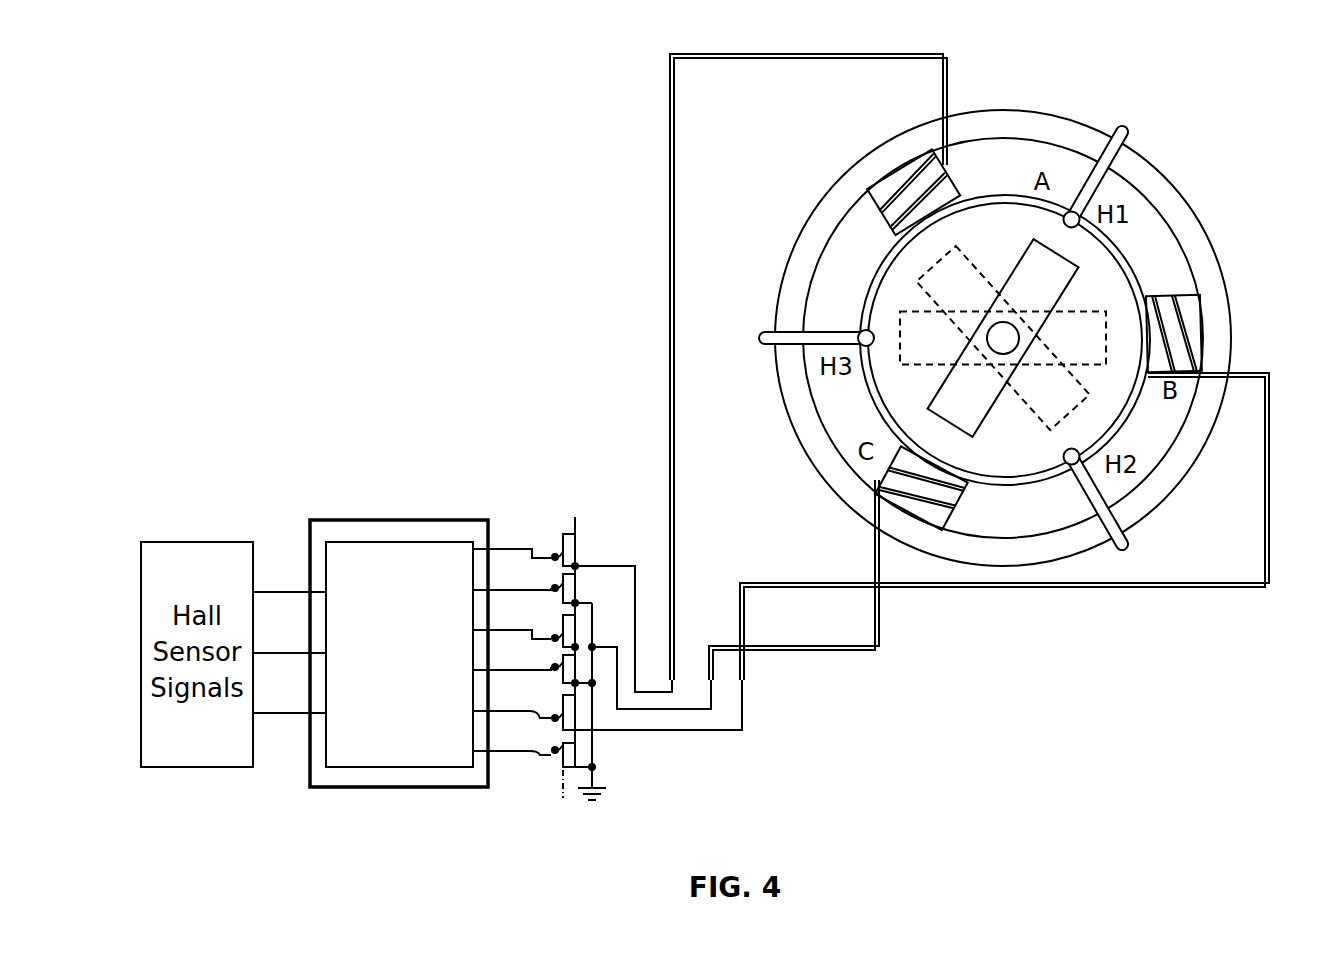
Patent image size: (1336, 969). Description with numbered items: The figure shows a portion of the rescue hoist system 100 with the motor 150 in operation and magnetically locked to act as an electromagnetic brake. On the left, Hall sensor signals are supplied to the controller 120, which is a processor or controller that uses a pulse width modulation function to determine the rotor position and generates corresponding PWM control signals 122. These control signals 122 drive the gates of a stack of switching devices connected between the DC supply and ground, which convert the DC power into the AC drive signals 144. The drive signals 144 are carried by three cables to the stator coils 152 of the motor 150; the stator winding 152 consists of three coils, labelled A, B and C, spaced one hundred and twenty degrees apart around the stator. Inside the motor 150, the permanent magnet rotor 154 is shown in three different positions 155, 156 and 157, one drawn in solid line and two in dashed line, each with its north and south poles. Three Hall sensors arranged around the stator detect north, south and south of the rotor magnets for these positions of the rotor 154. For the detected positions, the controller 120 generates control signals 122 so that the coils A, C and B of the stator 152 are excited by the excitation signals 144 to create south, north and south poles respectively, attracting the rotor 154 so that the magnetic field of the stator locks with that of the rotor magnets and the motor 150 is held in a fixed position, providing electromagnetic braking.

The rescue hoist system 100 is at (1243, 80).
The controller 120 is at (400, 518).
The control signals 122 is at (487, 793).
The drive signals 144 is at (670, 416).
The motor 150 is at (998, 110).
The stator coils 152 is at (950, 172).
The rotor 154 is at (1003, 352).
The rotor position 155 is at (936, 259).
The rotor position 156 is at (961, 434).
The rotor position 157 is at (1108, 358).